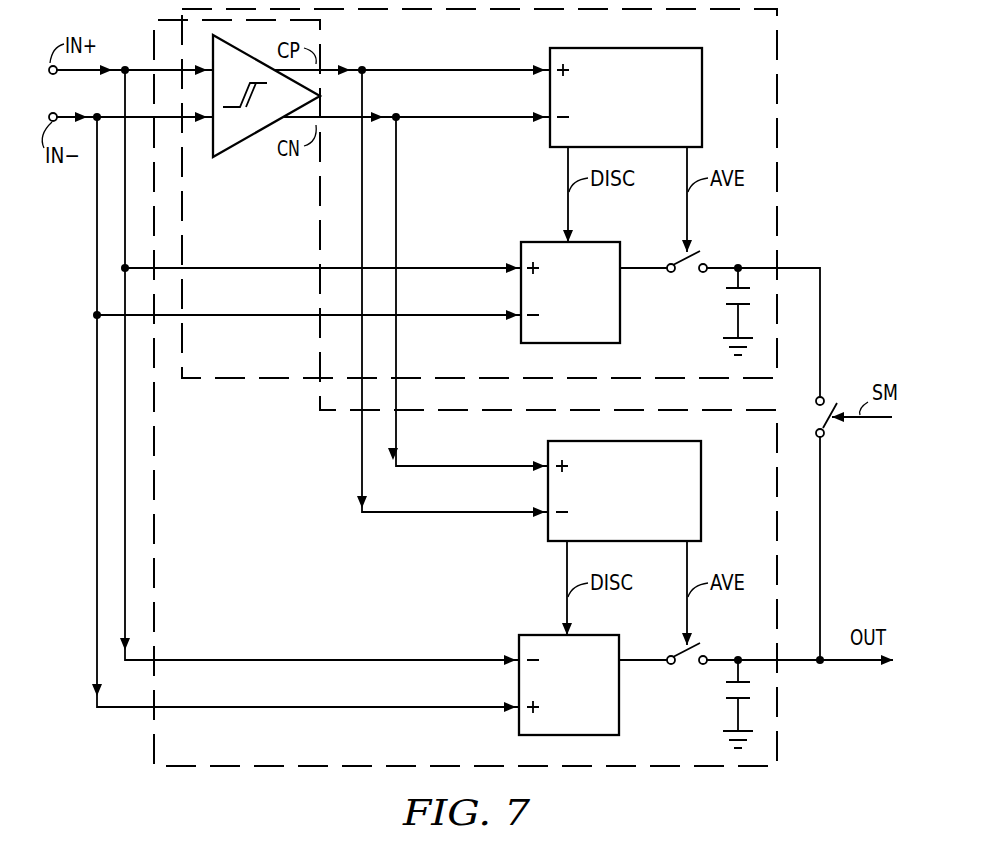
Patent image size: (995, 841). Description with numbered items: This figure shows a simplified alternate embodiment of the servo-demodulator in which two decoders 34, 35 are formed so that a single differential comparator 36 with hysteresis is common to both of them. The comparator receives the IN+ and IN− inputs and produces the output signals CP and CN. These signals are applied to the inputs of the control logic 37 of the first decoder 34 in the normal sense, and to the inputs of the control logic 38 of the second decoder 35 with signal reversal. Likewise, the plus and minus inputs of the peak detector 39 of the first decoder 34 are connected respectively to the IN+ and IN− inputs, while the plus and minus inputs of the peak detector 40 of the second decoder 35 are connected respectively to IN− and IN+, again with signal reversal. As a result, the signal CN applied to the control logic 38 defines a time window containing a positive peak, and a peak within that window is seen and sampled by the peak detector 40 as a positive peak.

The first decoder 34 is at (779, 130).
The second decoder 35 is at (154, 737).
The differential comparator with hysteresis 36 is at (247, 160).
The control logic of the first decoder 37 is at (704, 97).
The control logic of the second decoder 38 is at (703, 458).
The peak detector of the first decoder 39 is at (547, 242).
The peak detector of the second decoder 40 is at (548, 635).